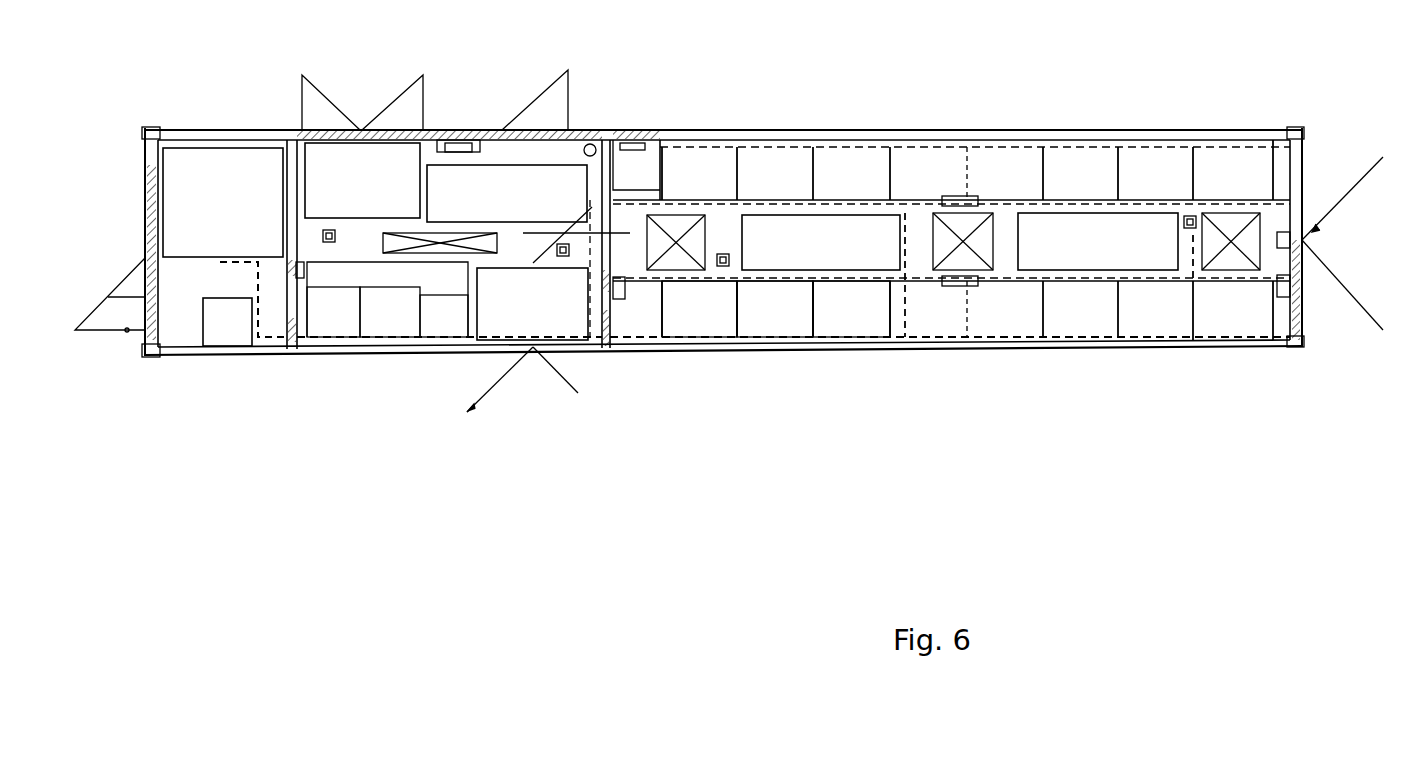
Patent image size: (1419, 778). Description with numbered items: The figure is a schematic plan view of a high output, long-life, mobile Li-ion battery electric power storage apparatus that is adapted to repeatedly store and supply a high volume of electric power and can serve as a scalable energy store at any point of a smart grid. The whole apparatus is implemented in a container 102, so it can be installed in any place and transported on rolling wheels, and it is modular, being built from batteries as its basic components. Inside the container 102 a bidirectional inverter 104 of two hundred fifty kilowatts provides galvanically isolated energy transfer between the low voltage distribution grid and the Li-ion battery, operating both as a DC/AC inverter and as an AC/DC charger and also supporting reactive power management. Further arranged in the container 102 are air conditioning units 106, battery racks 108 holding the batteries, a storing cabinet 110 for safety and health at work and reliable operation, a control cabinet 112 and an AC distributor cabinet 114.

The container 102 is at (765, 130).
The bidirectional inverter 104 is at (413, 132).
The air conditioning unit 106 is at (218, 146).
The battery rack 108 is at (680, 325).
The storing cabinet 110 is at (220, 330).
The control cabinet 112 is at (320, 325).
The AC distributor cabinet 114 is at (373, 325).